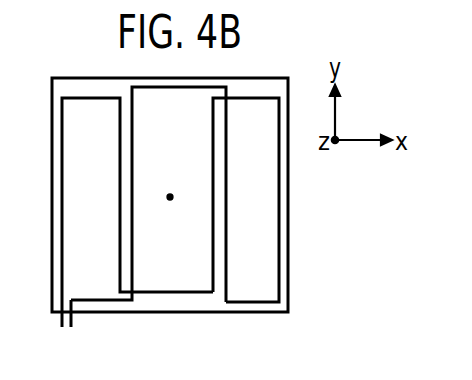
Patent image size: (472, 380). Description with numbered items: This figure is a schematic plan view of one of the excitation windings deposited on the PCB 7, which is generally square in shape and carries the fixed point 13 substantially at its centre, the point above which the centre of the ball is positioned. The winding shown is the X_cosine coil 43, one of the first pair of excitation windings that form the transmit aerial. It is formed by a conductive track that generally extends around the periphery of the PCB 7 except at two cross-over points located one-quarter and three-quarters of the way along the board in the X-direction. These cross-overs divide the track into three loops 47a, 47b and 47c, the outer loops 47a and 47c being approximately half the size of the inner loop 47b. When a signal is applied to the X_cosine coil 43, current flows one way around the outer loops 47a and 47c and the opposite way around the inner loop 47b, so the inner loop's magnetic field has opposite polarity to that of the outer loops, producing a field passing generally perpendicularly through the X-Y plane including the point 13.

The PCB 7 is at (277, 77).
The fixed point 13 is at (171, 192).
The X_cosine coil 43 is at (58, 262).
The outer loop 47a is at (94, 270).
The inner loop 47b is at (165, 270).
The outer loop 47c is at (248, 270).